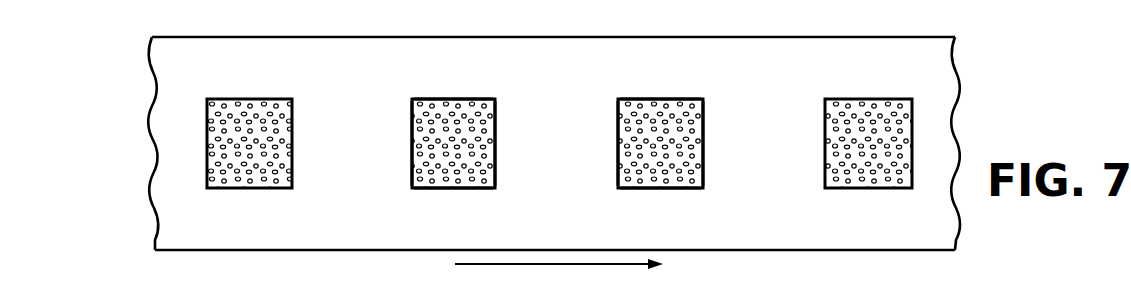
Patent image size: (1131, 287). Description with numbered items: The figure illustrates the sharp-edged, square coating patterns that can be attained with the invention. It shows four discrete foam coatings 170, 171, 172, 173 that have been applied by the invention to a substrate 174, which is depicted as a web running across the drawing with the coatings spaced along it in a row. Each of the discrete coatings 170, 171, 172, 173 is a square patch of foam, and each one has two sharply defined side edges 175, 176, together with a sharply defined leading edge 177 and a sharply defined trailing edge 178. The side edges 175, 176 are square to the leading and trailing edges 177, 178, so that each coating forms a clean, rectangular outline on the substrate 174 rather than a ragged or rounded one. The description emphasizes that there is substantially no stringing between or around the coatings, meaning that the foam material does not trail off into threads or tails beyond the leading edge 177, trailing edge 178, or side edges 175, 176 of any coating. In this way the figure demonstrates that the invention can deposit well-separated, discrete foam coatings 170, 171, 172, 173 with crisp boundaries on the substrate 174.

The discrete foam coating 170 is at (247, 86).
The discrete foam coating 171 is at (497, 86).
The discrete foam coating 172 is at (710, 86).
The discrete foam coating 173 is at (899, 86).
The substrate 174 is at (166, 221).
The side edge 175 is at (463, 70).
The side edge 176 is at (456, 189).
The leading edge 177 is at (496, 133).
The trailing edge 178 is at (410, 153).